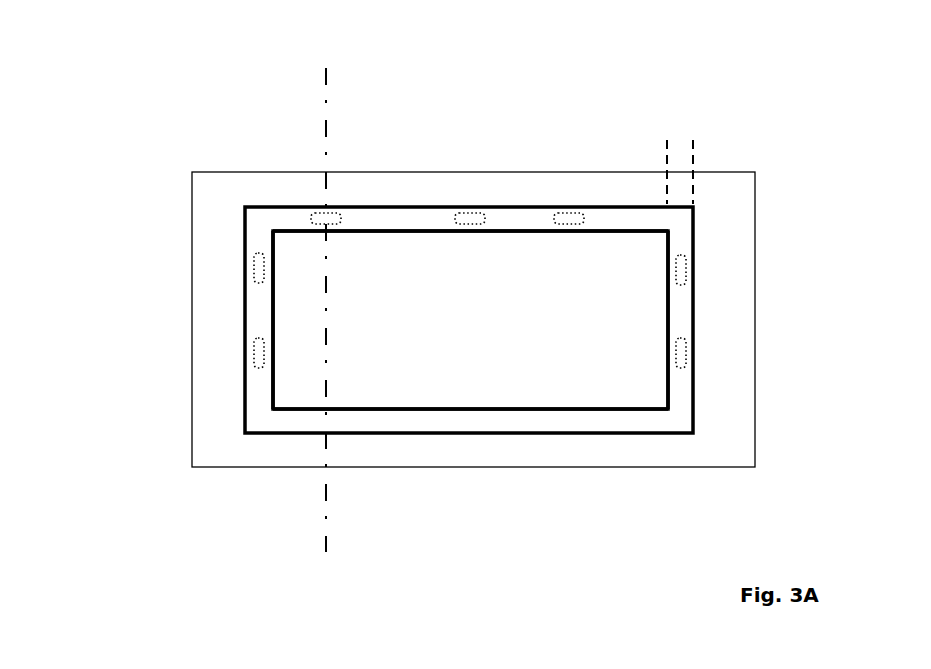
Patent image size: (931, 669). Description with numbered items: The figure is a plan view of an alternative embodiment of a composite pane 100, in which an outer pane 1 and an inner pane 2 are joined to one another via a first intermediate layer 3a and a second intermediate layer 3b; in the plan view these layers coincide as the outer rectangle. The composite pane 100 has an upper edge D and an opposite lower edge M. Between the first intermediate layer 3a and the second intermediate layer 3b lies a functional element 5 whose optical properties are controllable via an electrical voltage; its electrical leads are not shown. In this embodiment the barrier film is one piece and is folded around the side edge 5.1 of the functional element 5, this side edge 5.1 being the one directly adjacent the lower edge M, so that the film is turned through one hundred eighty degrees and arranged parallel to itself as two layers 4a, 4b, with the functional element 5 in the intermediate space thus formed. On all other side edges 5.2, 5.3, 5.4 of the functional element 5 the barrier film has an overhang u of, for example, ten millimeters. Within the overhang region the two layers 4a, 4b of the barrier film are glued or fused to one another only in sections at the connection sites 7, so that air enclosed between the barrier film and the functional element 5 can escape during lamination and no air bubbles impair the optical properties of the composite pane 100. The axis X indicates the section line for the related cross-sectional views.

The composite pane 100 is at (232, 88).
The outer pane 1 is at (403, 286).
The inner pane 2 is at (403, 286).
The first intermediate layer 3a is at (403, 286).
The second intermediate layer 3b is at (192, 182).
The barrier film layer 4a is at (377, 320).
The barrier film layer 4b is at (245, 348).
The functional element 5 is at (273, 300).
The side edge of functional element 5.1 is at (413, 414).
The side edge of functional element 5.2 is at (669, 386).
The side edge of functional element 5.3 is at (413, 229).
The side edge of functional element 5.4 is at (272, 385).
The connection sites 7 is at (692, 266).
The axis X-X' X is at (327, 310).
The upper edge D is at (504, 135).
The lower edge M is at (606, 495).
The overhang u is at (692, 128).